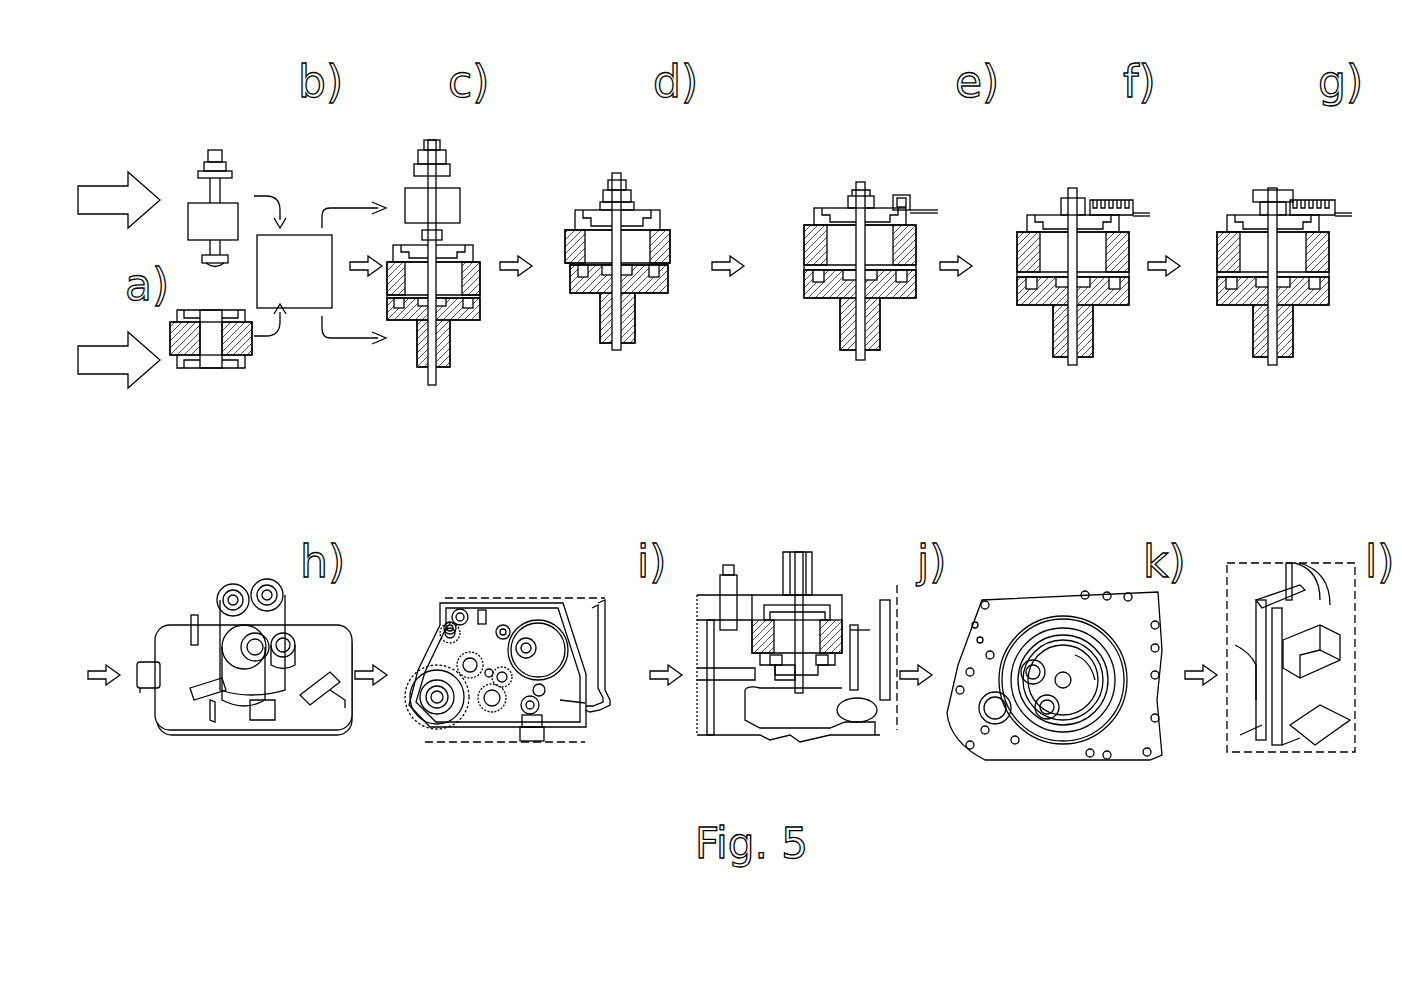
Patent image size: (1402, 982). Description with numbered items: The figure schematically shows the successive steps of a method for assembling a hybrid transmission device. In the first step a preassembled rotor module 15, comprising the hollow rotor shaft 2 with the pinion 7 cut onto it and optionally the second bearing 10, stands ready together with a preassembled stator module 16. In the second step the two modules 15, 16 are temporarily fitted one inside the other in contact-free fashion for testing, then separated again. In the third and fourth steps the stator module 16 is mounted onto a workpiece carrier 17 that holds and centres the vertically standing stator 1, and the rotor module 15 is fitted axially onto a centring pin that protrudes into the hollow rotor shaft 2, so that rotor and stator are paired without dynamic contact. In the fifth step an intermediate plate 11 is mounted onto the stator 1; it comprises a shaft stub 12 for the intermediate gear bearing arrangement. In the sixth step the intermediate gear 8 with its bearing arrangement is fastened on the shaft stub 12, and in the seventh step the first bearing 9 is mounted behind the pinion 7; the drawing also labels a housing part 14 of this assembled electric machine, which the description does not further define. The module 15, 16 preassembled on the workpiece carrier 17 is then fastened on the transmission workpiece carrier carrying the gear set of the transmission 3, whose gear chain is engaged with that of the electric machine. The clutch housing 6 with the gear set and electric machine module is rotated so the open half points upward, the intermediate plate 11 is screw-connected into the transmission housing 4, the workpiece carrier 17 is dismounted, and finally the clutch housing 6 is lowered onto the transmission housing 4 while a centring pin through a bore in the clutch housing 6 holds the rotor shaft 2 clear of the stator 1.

The stator 1 is at (203, 372).
The rotor shaft 2 is at (236, 188).
The transmission 3 is at (220, 622).
The transmission housing 4 is at (764, 695).
The clutch housing 6 is at (1004, 593).
The pinion 7 is at (190, 162).
The intermediate gear 8 is at (1080, 182).
The first bearing 9 is at (1249, 175).
The second bearing 10 is at (192, 252).
The intermediate plate 11 is at (878, 192).
The shaft stub 12 is at (900, 182).
The bearing housing 14 is at (1003, 243).
The rotor module 15 is at (268, 184).
The stator module 16 is at (560, 212).
The workpiece carrier 17 is at (410, 345).